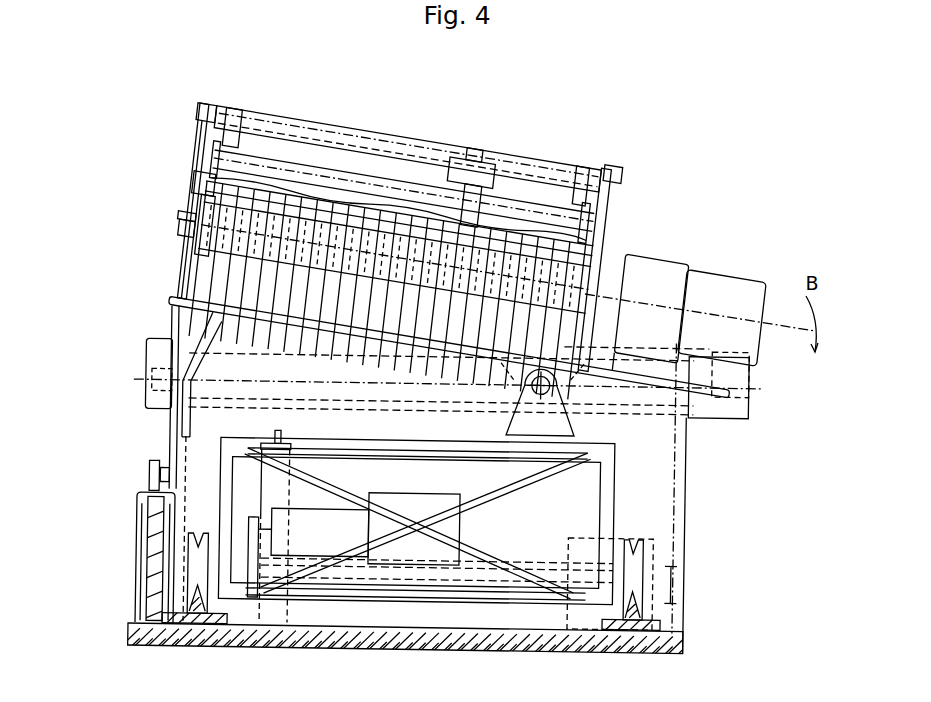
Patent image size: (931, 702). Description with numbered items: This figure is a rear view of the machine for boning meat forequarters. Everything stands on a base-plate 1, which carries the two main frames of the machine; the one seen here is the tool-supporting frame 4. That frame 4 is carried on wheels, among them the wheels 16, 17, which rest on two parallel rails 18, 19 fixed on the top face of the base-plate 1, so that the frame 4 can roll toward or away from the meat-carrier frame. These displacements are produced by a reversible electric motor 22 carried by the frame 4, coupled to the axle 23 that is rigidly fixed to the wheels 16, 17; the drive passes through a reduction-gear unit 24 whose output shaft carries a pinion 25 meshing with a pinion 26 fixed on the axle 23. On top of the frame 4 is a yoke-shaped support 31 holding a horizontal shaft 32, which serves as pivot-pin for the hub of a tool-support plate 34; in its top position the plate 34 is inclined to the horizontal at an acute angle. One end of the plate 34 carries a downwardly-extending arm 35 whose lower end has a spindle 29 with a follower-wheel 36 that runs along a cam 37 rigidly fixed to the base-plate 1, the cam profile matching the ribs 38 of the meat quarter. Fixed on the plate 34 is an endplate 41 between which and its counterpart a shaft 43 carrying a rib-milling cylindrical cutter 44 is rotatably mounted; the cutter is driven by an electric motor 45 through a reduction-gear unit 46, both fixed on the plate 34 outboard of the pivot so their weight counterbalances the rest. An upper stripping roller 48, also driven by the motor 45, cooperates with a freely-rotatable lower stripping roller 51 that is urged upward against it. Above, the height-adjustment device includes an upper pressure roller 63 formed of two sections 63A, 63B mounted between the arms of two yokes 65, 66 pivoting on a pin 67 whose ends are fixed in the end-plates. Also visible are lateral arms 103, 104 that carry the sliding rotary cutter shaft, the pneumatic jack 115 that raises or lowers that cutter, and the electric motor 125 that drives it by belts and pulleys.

The base-plate 1 is at (668, 642).
The frame 4 is at (357, 593).
The wheel 16 is at (625, 558).
The wheel 17 is at (193, 587).
The rail 18 is at (650, 625).
The rail 19 is at (150, 645).
The reversible electric motor 22 is at (430, 502).
The axle 23 is at (493, 582).
The reduction-gear unit 24 is at (316, 536).
The pinion 25 is at (250, 527).
The pinion 26 is at (242, 553).
The spindle 29 is at (163, 463).
The support 31 is at (550, 422).
The horizontal shaft 32 is at (544, 392).
The tool-support plate 34 is at (173, 300).
The downwardly-extending arm 35 is at (198, 350).
The follower-wheel 36 is at (152, 465).
The cam 37 is at (155, 518).
The ribs 38 is at (260, 293).
The endplate 41 is at (185, 290).
The shaft 43 is at (182, 216).
The rib-milling cylindrical cutter 44 is at (178, 233).
The electric motor 45 is at (732, 300).
The reduction-gear unit 46 is at (660, 285).
The upper stripping roller 48 is at (220, 195).
The lower stripping roller 51 is at (208, 202).
The upper pressure roller 63 is at (408, 177).
The section 63A is at (513, 207).
The section 63B is at (373, 183).
The yoke 65 is at (583, 193).
The yoke 66 is at (232, 133).
The pin 67 is at (198, 110).
The lateral arm 103 is at (735, 404).
The lateral arm 104 is at (160, 398).
The pneumatic jack 115 is at (193, 473).
The electric motor 125 is at (580, 553).